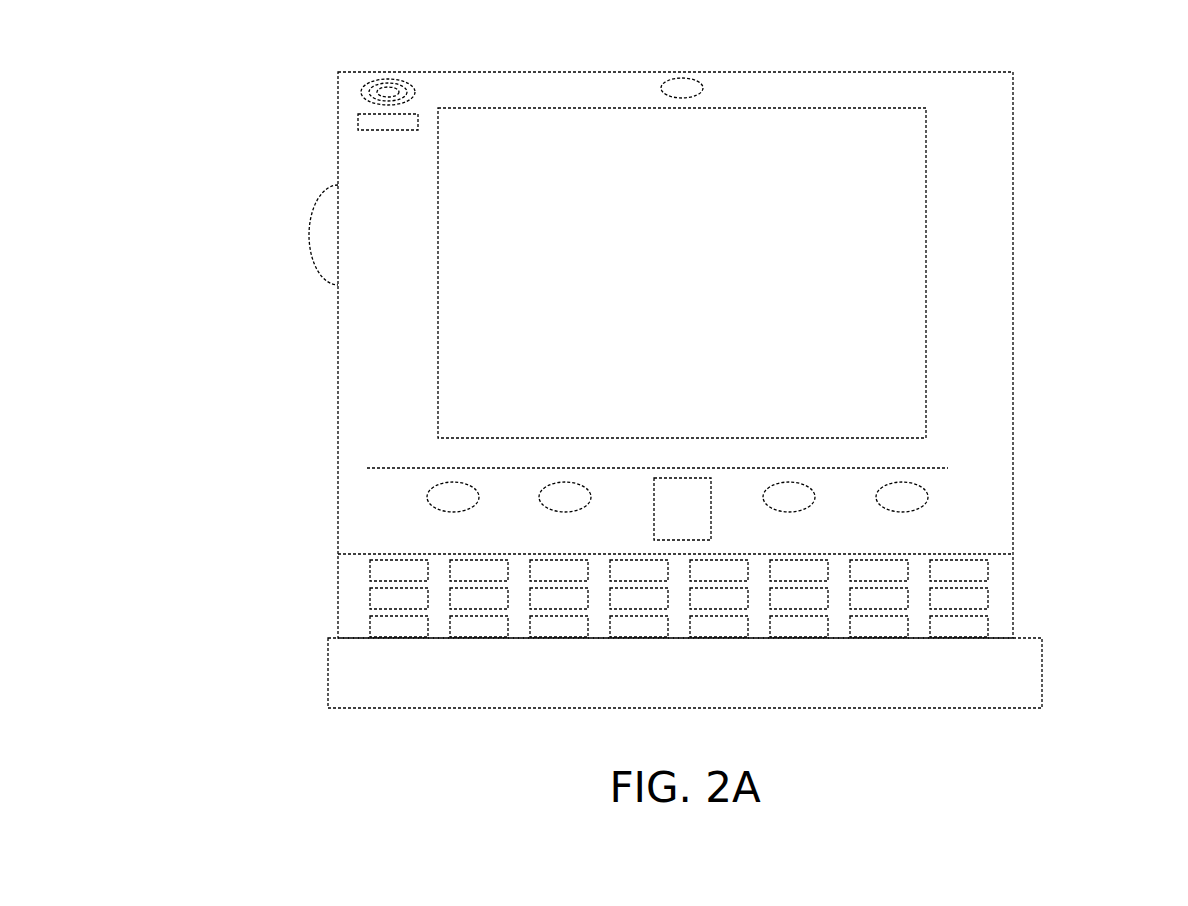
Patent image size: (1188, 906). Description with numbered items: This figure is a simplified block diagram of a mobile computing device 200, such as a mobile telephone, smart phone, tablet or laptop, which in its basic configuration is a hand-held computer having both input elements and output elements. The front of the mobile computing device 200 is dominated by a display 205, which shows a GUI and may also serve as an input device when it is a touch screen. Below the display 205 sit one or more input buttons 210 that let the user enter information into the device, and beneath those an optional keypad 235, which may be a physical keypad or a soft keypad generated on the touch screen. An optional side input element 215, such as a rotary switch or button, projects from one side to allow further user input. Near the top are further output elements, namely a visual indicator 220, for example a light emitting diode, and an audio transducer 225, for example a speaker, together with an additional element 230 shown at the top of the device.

The mobile computing device 200 is at (997, 84).
The display 205 is at (589, 383).
The input buttons 210 is at (680, 513).
The side input element 215 is at (326, 234).
The visual indicator 220 is at (356, 125).
The audio transducer 225 is at (360, 92).
The speaker 230 is at (702, 88).
The keypad 235 is at (350, 628).